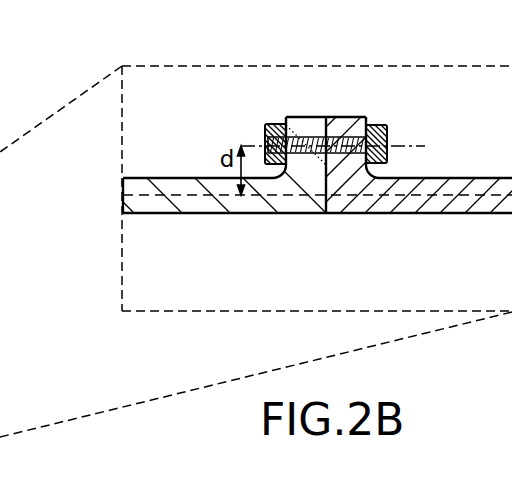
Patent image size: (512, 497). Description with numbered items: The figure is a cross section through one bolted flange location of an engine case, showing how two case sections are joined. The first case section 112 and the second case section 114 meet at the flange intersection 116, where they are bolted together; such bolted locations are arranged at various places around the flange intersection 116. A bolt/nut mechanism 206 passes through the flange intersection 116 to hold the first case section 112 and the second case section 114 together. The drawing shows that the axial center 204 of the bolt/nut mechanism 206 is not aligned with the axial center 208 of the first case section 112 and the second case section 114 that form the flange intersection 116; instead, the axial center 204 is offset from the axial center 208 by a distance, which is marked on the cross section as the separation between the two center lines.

The first case section 112 is at (197, 187).
The second case section 114 is at (471, 189).
The flange intersection 116 is at (333, 117).
The axial center of bolt/nut mechanism 204 is at (402, 145).
The bolt/nut mechanism 206 is at (277, 127).
The axial center of the case sections 208 is at (101, 198).